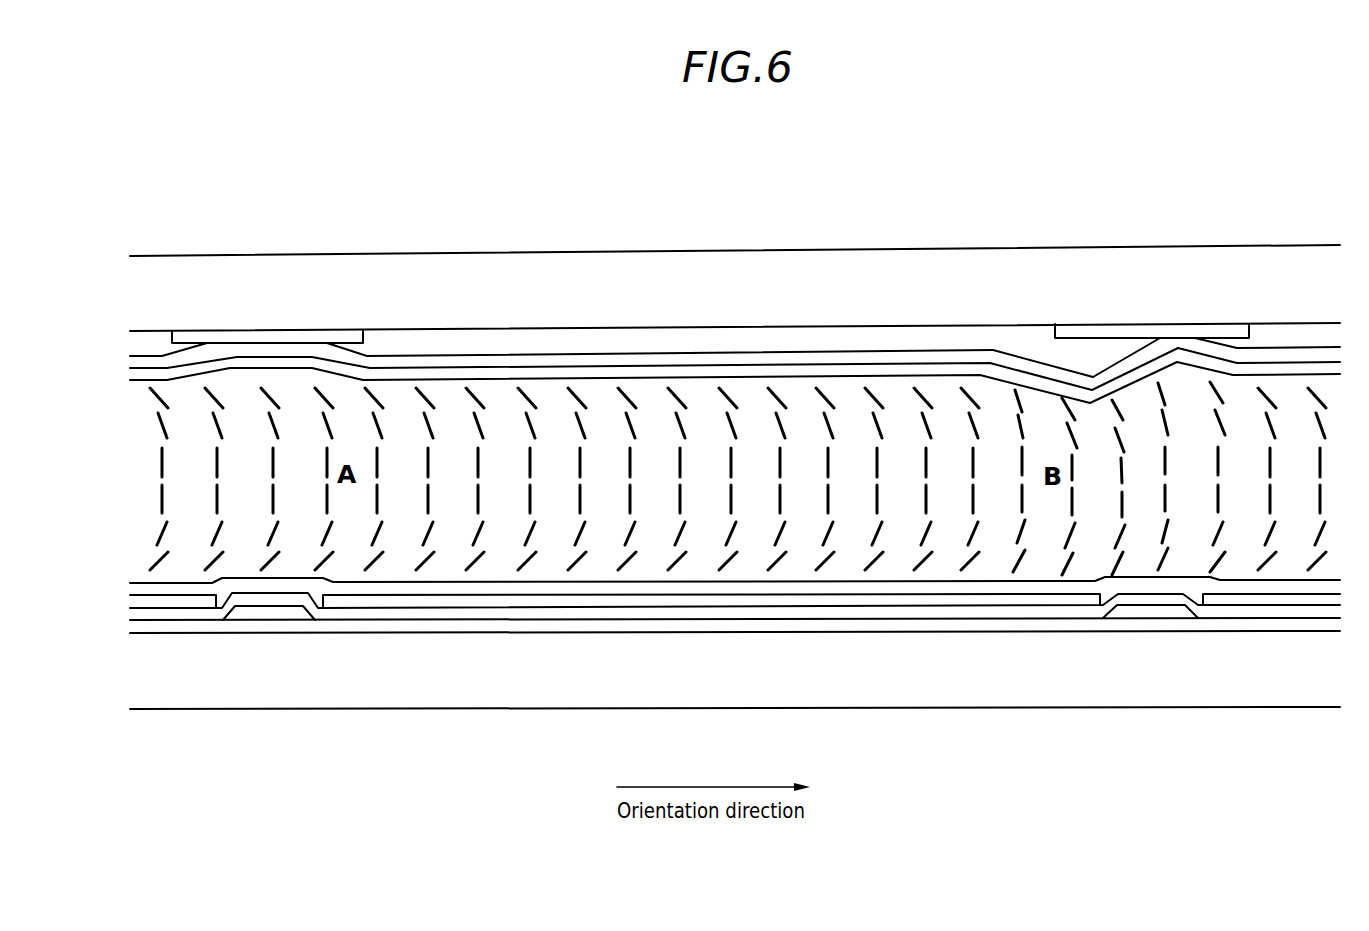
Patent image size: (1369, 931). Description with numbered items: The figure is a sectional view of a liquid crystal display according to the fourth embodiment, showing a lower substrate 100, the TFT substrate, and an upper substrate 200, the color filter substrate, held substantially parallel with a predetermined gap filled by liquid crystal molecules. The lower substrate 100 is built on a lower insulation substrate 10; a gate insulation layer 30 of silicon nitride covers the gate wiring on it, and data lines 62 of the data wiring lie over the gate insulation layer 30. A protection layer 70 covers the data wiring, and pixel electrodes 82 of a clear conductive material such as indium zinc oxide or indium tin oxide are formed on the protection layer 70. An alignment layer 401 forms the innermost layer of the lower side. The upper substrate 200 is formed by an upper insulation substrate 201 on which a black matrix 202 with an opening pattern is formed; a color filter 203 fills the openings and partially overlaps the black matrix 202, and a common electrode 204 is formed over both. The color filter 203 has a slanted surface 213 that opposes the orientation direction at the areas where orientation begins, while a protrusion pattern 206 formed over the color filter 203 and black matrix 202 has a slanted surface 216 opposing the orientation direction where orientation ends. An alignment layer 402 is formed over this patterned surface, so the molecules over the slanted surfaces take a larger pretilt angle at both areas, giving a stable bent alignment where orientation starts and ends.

The upper substrate 200 is at (685, 228).
The upper insulation substrate 201 is at (323, 262).
The black matrix 202 is at (246, 341).
The color filter 203 is at (520, 331).
The common electrode 204 is at (800, 360).
The protrusion pattern 206 is at (1092, 367).
The slanted surface 213 is at (371, 355).
The slanted surface 216 is at (1037, 362).
The alignment layer 402 is at (880, 372).
The lower substrate 100 is at (421, 740).
The lower insulation substrate 10 is at (581, 697).
The gate insulation layer 30 is at (842, 627).
The data line 62 is at (257, 617).
The protection layer 70 is at (967, 615).
The pixel electrode 82 is at (898, 600).
The alignment layer 401 is at (1044, 590).